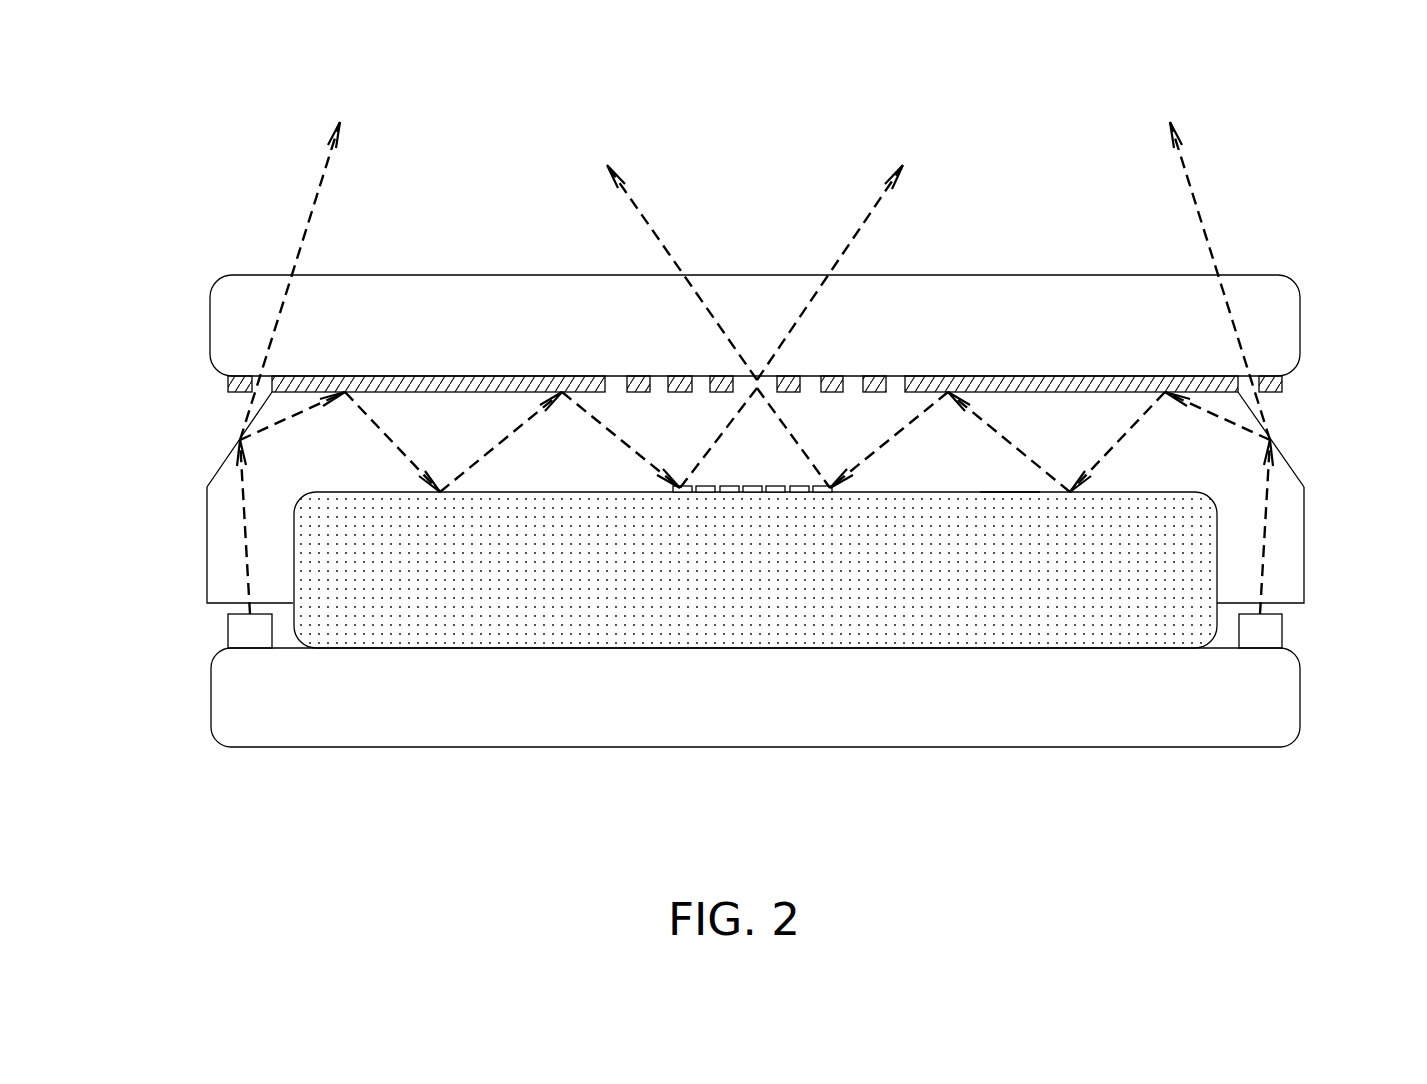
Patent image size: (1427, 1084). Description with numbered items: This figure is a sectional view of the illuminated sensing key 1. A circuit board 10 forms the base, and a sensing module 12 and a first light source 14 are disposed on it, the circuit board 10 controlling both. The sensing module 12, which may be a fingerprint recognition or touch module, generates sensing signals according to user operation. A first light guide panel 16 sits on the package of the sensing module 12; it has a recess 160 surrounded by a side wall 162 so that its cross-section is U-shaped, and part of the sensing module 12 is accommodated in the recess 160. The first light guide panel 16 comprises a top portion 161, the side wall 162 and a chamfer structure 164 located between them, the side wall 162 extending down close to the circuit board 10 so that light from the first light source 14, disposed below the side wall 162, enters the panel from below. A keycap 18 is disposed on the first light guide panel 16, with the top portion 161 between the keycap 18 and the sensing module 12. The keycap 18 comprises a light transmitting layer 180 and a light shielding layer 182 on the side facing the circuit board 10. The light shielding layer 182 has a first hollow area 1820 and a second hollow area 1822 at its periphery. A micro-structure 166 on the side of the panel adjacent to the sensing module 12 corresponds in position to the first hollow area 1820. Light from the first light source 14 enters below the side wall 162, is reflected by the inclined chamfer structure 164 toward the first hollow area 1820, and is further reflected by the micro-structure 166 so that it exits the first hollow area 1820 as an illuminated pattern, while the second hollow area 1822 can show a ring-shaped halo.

The illuminated sensing key 1 is at (1263, 162).
The circuit board 10 is at (783, 711).
The sensing module 12 is at (783, 584).
The first light source 14 is at (237, 637).
The first light guide panel 16 is at (848, 441).
The recess 160 is at (1010, 490).
The top portion 161 is at (437, 415).
The side wall 162 is at (207, 543).
The chamfer structure 164 is at (220, 470).
The micro-structure 166 is at (704, 493).
The keycap 18 is at (1390, 298).
The light transmitting layer 180 is at (1277, 323).
The light shielding layer 182 is at (1284, 384).
The first hollow area 1820 is at (757, 384).
The second hollow area 1822 is at (252, 374).